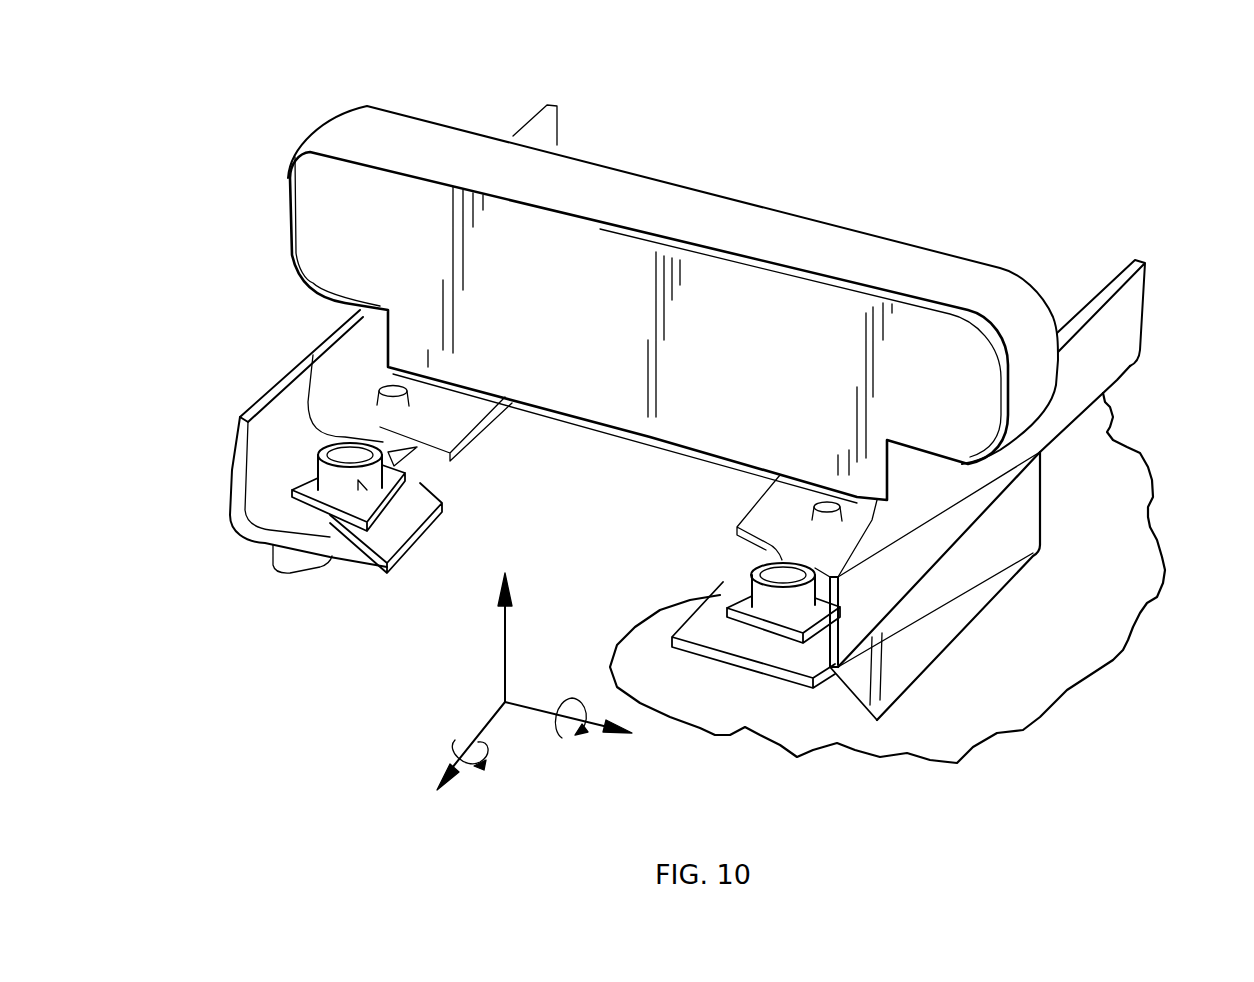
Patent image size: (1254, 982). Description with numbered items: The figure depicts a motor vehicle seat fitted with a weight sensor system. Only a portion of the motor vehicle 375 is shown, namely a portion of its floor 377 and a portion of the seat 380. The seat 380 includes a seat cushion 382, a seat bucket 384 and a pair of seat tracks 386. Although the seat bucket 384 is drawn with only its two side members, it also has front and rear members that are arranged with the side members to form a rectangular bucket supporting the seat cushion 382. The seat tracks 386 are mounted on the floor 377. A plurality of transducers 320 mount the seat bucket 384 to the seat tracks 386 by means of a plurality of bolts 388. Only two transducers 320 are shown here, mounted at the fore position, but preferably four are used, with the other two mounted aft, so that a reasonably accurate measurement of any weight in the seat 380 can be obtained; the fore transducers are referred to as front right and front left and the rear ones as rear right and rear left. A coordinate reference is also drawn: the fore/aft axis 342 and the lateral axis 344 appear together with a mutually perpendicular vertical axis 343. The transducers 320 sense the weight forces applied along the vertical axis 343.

The seat 380 is at (686, 394).
The seat cushion 382 is at (689, 185).
The seat bucket 384 is at (483, 427).
The seat tracks 386 is at (233, 440).
The bolts 388 is at (417, 417).
The transducers 320 is at (358, 483).
The motor vehicle 375 is at (1105, 693).
The floor 377 is at (1137, 517).
The fore/aft axis 342 is at (530, 707).
The vertical axis 343 is at (503, 632).
The lateral axis 344 is at (488, 745).